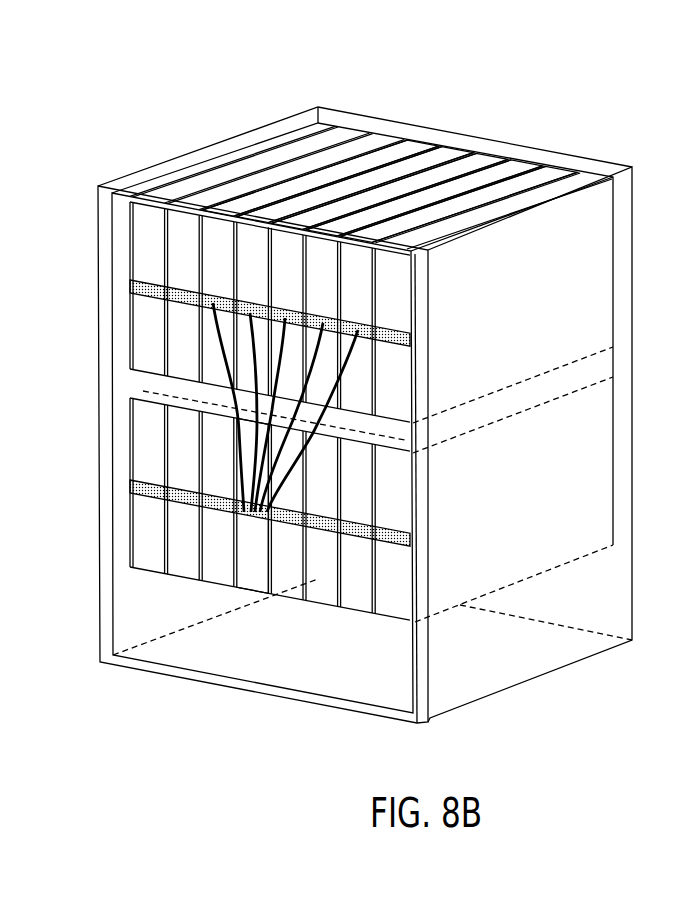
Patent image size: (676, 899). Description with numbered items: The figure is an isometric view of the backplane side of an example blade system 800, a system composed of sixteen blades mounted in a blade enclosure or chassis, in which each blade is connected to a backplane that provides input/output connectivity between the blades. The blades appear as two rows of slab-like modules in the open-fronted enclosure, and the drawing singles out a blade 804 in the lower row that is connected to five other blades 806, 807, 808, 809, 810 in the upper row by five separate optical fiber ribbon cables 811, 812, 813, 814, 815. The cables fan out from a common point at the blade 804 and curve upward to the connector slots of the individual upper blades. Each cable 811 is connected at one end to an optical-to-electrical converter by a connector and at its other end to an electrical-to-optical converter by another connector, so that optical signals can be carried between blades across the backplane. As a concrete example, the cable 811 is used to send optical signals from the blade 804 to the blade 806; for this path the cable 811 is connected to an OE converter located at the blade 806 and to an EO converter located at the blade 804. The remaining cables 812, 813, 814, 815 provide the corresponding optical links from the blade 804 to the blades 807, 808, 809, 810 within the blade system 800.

The blade system 800 is at (498, 60).
The blade 804 is at (257, 582).
The blade 806 is at (413, 143).
The blade 807 is at (450, 152).
The blade 808 is at (482, 158).
The blade 809 is at (520, 172).
The blade 810 is at (553, 176).
The optical fiber ribbon cable 811 is at (210, 306).
The optical fiber ribbon cable 812 is at (250, 358).
The optical fiber ribbon cable 813 is at (230, 388).
The optical fiber ribbon cable 814 is at (252, 428).
The optical fiber ribbon cable 815 is at (250, 463).